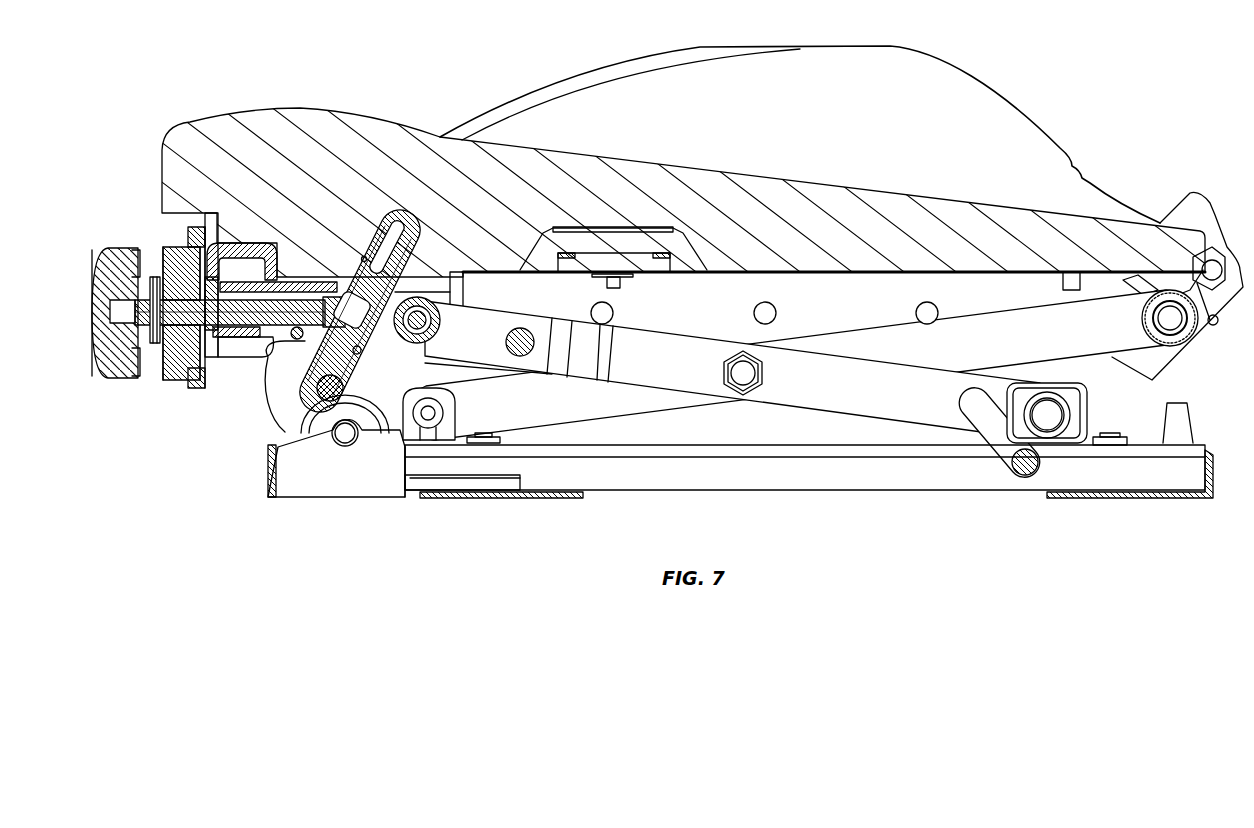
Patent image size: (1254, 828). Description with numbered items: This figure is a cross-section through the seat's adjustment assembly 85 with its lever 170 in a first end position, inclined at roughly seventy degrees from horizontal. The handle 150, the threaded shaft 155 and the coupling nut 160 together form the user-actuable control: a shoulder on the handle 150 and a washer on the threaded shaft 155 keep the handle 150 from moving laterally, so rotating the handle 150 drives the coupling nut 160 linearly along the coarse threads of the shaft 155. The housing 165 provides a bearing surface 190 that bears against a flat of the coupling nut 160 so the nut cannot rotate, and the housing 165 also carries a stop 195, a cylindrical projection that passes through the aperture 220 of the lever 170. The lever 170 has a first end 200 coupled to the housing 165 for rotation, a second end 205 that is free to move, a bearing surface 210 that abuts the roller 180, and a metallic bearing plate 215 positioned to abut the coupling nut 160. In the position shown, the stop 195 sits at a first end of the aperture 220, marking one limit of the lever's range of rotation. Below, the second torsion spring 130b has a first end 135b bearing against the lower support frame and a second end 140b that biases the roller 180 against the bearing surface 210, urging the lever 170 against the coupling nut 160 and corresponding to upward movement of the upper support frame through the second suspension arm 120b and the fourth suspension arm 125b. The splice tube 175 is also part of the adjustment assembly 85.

The adjustment assembly 85 is at (146, 222).
The second suspension arm 120b is at (583, 407).
The fourth suspension arm 125b is at (813, 378).
The second torsion spring 130b is at (393, 445).
The first end of second torsion spring 135b is at (488, 478).
The second end of second torsion spring 140b is at (455, 376).
The handle 150 is at (100, 280).
The threaded shaft 155 is at (163, 360).
The coupling nut 160 is at (260, 337).
The housing 165 is at (242, 243).
The lever 170 is at (430, 245).
The splice tube 175 is at (441, 338).
The roller 180 is at (455, 318).
The bearing surface 190 is at (362, 258).
The stop 195 is at (348, 447).
The first end 200 is at (333, 423).
The second end 205 is at (410, 218).
The bearing surface 210 is at (455, 270).
The bearing plate 215 is at (325, 335).
The aperture 220 is at (285, 423).